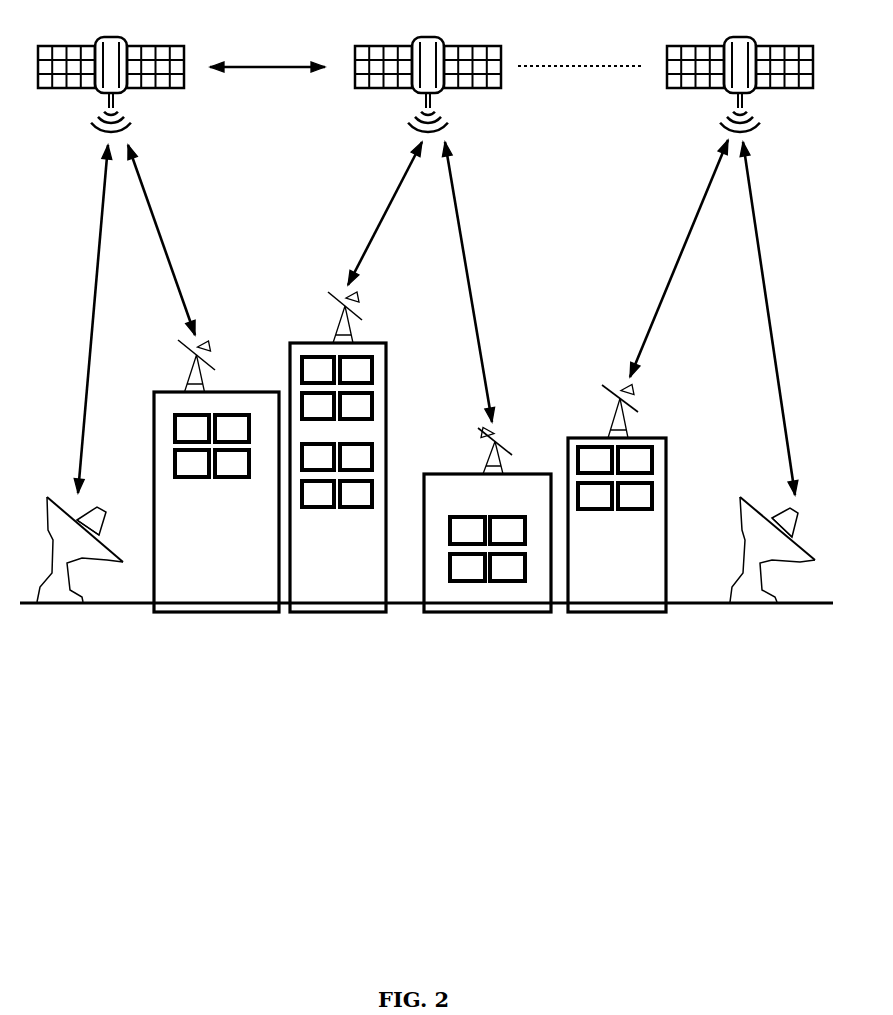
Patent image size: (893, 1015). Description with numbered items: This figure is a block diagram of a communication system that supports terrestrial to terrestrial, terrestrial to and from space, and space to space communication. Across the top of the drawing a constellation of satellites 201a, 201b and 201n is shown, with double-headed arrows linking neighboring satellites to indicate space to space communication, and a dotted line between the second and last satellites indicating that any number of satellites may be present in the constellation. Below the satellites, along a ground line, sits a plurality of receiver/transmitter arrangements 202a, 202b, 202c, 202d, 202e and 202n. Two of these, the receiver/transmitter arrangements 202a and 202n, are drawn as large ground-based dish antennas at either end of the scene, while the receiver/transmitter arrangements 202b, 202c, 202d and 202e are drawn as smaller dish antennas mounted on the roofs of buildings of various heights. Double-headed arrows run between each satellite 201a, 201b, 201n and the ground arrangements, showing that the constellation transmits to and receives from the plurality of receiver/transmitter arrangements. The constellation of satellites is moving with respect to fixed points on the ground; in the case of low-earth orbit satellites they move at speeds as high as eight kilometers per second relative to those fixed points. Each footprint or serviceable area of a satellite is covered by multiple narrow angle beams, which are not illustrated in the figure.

The satellite 201a is at (114, 38).
The satellite 201b is at (431, 38).
The satellite 201n is at (743, 38).
The receiver/transmitter arrangement 202a is at (47, 497).
The receiver/transmitter arrangement 202b is at (215, 370).
The receiver/transmitter arrangement 202c is at (362, 320).
The receiver/transmitter arrangement 202d is at (478, 428).
The receiver/transmitter arrangement 202e is at (638, 412).
The receiver/transmitter arrangement 202n is at (740, 497).